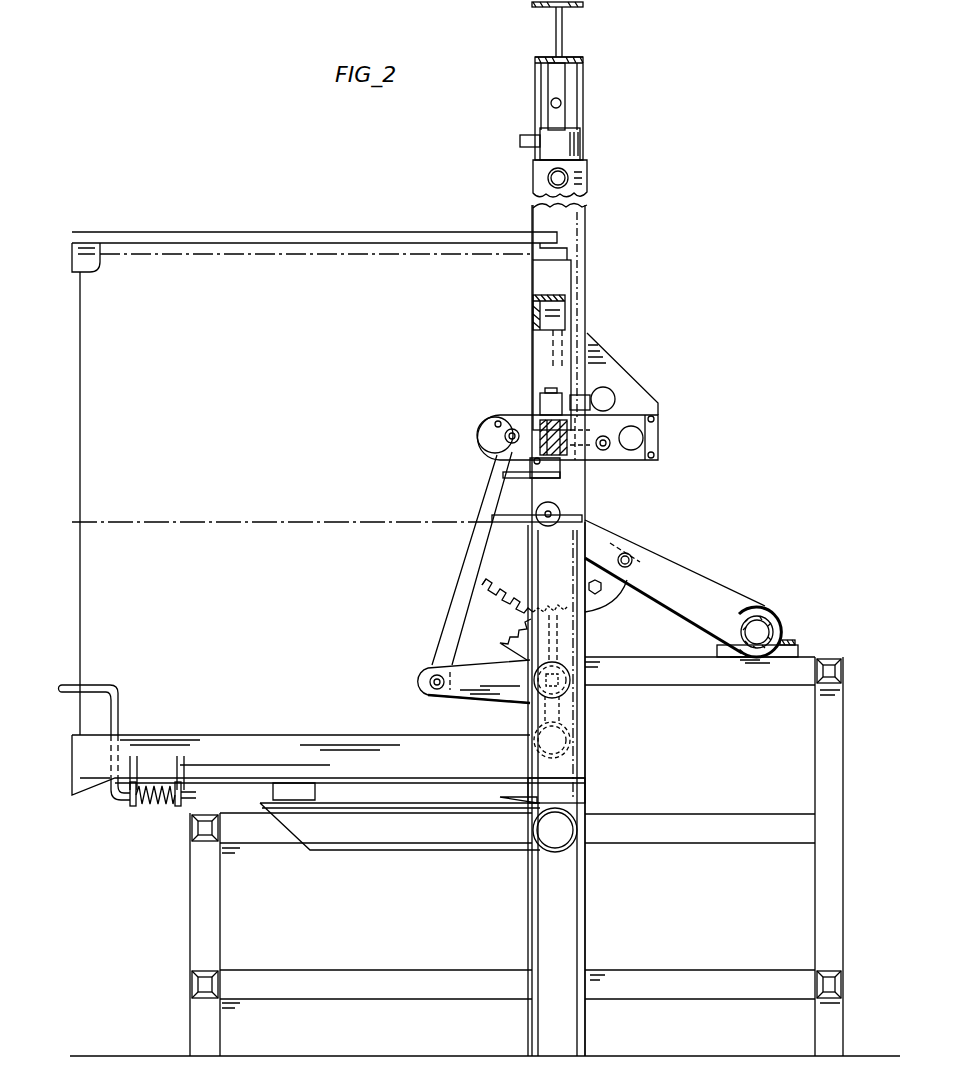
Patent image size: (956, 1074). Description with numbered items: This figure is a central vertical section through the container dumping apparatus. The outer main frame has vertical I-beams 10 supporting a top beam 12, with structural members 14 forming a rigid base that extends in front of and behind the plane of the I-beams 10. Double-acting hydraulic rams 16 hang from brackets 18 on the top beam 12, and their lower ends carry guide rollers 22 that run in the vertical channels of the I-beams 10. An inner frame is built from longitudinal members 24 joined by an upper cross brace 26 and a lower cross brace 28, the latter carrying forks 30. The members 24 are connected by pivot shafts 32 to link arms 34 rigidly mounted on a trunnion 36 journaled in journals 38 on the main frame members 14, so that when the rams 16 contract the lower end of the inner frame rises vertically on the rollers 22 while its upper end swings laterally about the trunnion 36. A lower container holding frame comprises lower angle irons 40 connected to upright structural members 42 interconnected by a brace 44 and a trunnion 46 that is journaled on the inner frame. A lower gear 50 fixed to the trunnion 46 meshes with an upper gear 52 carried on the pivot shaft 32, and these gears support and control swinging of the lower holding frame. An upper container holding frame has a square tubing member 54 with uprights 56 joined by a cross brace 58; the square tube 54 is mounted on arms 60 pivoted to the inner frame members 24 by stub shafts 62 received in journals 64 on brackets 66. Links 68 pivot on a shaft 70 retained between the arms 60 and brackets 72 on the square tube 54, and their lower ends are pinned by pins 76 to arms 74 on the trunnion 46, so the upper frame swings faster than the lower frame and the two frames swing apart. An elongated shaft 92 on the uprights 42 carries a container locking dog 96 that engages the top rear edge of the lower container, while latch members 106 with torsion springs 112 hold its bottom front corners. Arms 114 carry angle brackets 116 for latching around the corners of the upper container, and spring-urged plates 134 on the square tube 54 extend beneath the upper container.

The I-beams 10 is at (575, 95).
The top beam 12 is at (563, 40).
The structural members 14 is at (262, 822).
The double-acting hydraulic rams 16 is at (583, 145).
The brackets 18 is at (555, 82).
The guide rollers 22 is at (583, 763).
The longitudinal members 24 is at (580, 220).
The upper cross brace 26 is at (578, 172).
The lower cross brace 28 is at (553, 846).
The forks 30 is at (386, 850).
The pivot shafts 32 is at (552, 512).
The link arms 34 is at (668, 567).
The trunnion 36 is at (760, 617).
The journals 38 is at (785, 647).
The lower angle irons 40 is at (255, 745).
The upright structural members 42 is at (535, 716).
The brace 44 is at (512, 766).
The trunnion 46 is at (537, 677).
The lower gear 50 is at (515, 631).
The upper gear 52 is at (494, 575).
The square tubing member 54 is at (545, 420).
The uprights 56 is at (540, 357).
The cross brace 58 is at (533, 317).
The arms 60 is at (491, 444).
The stub shafts 62 is at (657, 437).
The journals 64 is at (657, 447).
The brackets 66 is at (627, 395).
The links 68 is at (470, 580).
The shaft 70 is at (505, 436).
The brackets 72 is at (495, 423).
The arms 74 is at (457, 700).
The pins 76 is at (430, 685).
The elongated shaft 92 is at (576, 702).
The container locking dogs 96 is at (497, 517).
The latch members 106 is at (120, 712).
The torsion springs 112 is at (158, 802).
The arms 114 is at (345, 232).
The angle brackets 116 is at (72, 245).
The plates 134 is at (515, 474).